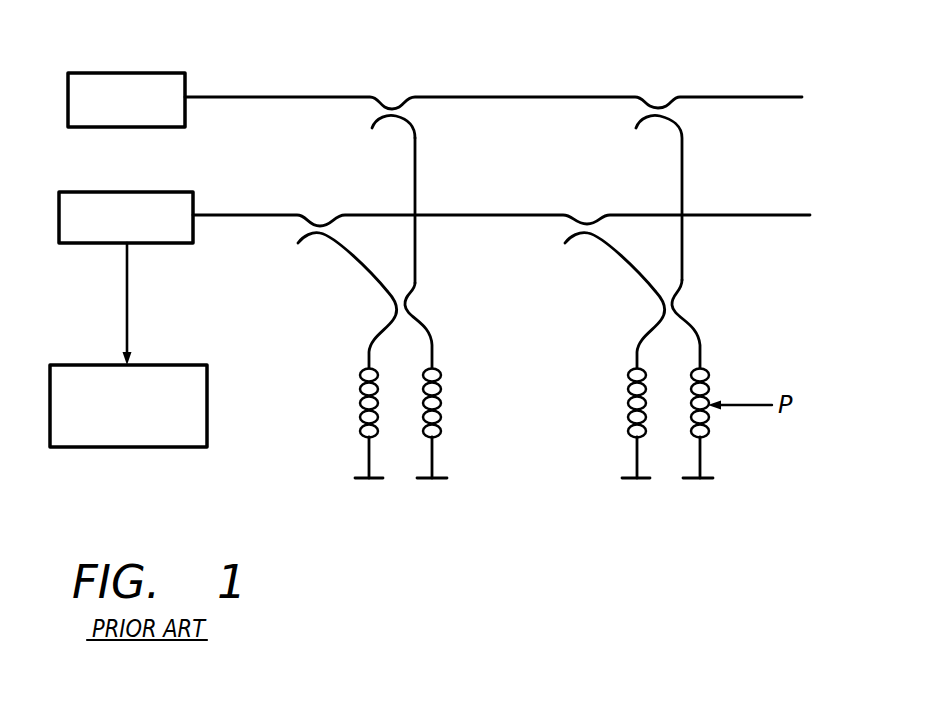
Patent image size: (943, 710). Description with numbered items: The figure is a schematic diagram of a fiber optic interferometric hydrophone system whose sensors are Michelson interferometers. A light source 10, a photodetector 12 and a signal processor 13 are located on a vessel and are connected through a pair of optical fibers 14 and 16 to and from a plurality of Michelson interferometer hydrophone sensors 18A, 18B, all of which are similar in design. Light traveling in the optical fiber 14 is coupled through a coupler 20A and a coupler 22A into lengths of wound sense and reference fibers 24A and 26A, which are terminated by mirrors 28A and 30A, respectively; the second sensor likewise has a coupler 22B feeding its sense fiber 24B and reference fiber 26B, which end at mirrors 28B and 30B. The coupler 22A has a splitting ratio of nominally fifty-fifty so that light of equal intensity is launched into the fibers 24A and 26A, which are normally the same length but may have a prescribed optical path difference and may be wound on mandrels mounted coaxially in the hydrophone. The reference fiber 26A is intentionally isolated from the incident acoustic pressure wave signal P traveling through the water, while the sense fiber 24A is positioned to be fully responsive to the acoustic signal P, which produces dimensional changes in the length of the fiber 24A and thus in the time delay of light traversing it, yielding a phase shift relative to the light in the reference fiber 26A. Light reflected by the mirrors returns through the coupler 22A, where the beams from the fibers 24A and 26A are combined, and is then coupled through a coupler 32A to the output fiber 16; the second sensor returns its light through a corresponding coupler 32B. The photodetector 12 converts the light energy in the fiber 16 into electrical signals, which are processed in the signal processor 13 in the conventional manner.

The light source 10 is at (184, 83).
The photodetector 12 is at (193, 195).
The signal processor 13 is at (207, 405).
The optical fiber 14 is at (267, 95).
The output fiber 16 is at (270, 213).
The Michelson interferometer hydrophone sensor 18A is at (456, 195).
The Michelson interferometer hydrophone sensor 18B is at (708, 243).
The coupler 20A is at (405, 78).
The coupler 22A is at (440, 314).
The coupler 22B is at (710, 300).
The sense fiber 24A is at (443, 422).
The sense fiber 24B is at (708, 422).
The reference fiber 26A is at (360, 412).
The reference fiber 26B is at (628, 400).
The mirror 28A is at (440, 482).
The mirror 28B is at (707, 482).
The mirror 30A is at (360, 481).
The mirror 30B is at (628, 482).
The coupler 32A is at (314, 263).
The coupler 32B is at (579, 254).
The acoustic pressure wave signal P is at (454, 405).